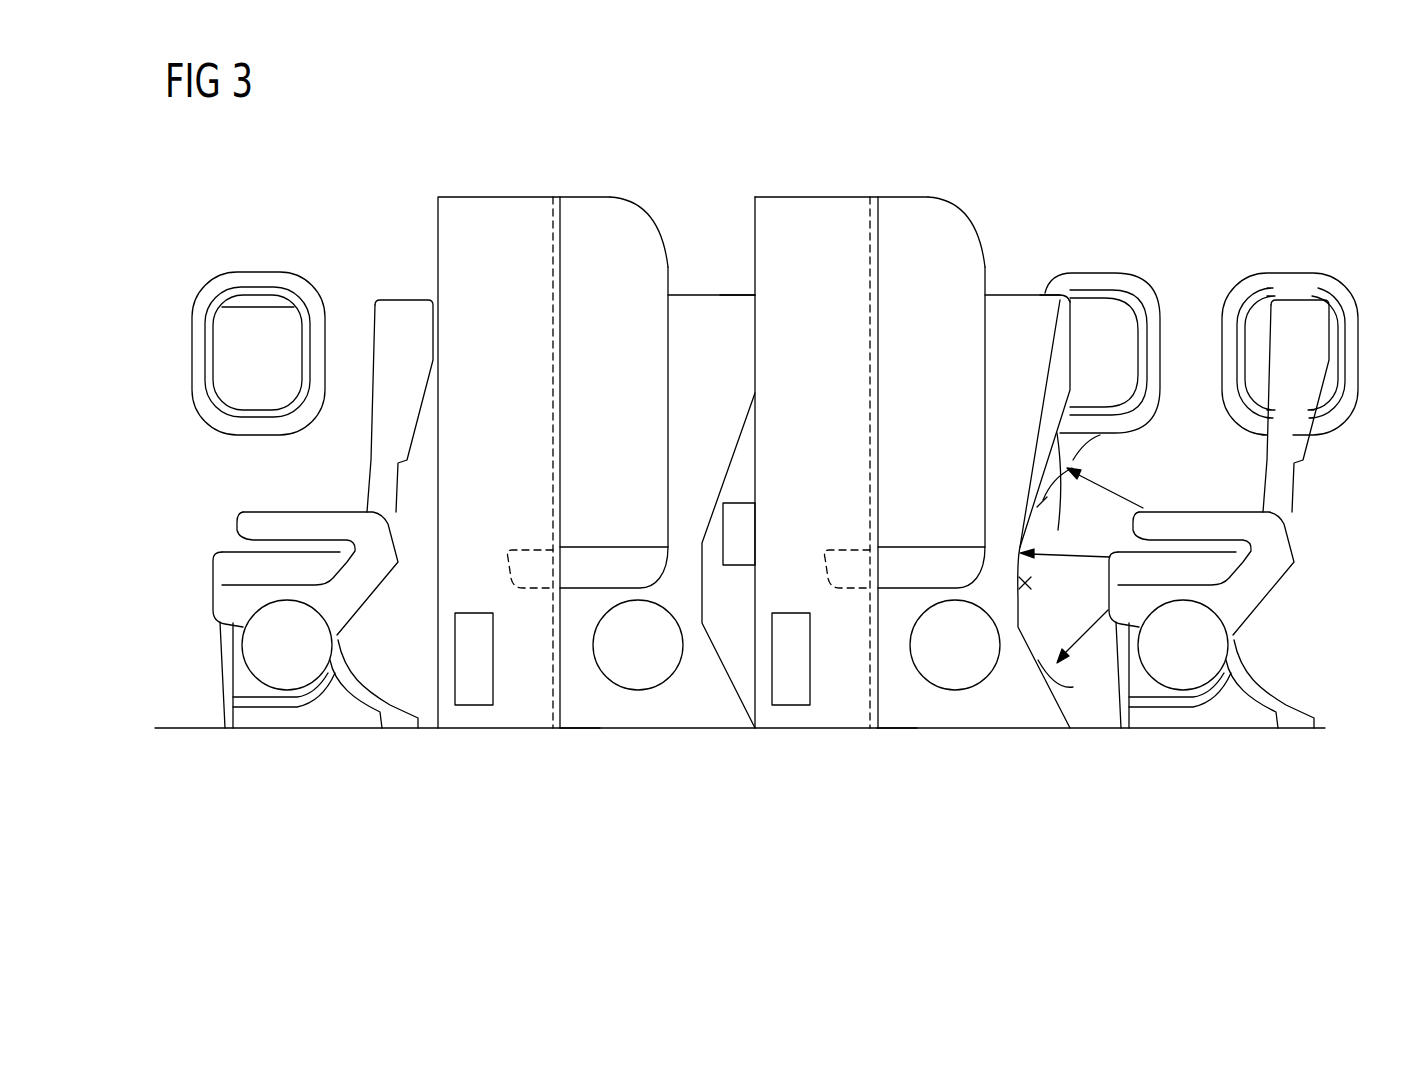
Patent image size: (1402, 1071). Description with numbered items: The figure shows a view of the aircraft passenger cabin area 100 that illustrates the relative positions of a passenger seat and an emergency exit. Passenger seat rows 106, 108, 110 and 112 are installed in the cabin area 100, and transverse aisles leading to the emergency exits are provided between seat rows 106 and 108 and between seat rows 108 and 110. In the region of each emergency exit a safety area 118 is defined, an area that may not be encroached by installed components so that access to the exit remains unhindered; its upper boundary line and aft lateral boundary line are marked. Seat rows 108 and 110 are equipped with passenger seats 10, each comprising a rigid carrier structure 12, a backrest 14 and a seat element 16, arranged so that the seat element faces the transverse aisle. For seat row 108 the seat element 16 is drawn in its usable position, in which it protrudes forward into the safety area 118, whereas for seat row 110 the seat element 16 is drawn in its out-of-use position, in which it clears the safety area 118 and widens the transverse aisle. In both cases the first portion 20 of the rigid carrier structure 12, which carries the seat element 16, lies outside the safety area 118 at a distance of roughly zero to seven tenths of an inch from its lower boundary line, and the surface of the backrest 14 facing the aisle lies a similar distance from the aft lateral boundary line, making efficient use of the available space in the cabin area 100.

The aircraft passenger cabin area 100 is at (1268, 137).
The passenger seat row 106 is at (403, 217).
The passenger seat row 108 is at (732, 197).
The passenger seat row 110 is at (1047, 197).
The passenger seat row 112 is at (1306, 258).
The safety area 118 is at (617, 217).
The passenger seat 10 is at (693, 308).
The backrest 14 is at (730, 308).
The seat element 16 is at (600, 565).
The rigid carrier structure 12 is at (665, 690).
The first portion of the rigid carrier structure 20 is at (582, 622).